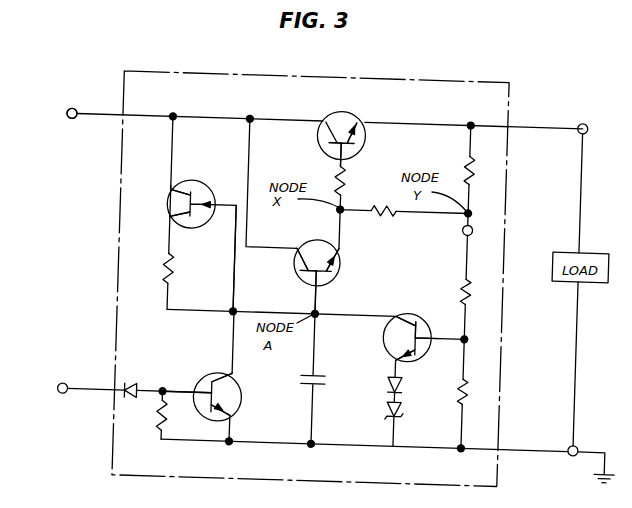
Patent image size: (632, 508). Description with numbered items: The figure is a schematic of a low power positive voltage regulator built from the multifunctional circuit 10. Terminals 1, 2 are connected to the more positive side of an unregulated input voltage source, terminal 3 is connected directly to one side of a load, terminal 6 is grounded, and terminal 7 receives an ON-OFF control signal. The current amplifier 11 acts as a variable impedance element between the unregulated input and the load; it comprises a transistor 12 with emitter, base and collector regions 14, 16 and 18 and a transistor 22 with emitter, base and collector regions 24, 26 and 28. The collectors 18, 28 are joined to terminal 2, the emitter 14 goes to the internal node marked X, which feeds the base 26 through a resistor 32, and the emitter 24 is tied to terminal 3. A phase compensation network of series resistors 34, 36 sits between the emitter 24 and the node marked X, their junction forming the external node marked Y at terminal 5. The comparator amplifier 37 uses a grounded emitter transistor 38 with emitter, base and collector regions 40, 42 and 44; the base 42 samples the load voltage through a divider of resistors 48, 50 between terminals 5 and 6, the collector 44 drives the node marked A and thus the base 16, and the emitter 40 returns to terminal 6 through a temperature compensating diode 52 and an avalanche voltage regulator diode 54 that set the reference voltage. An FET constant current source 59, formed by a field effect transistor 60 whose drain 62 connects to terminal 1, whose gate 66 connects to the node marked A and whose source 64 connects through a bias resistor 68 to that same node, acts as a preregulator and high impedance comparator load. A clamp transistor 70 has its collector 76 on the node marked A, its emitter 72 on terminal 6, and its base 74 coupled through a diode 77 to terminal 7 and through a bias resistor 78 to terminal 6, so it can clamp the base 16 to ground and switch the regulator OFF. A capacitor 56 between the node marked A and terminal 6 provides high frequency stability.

The external terminal 1 is at (50, 88).
The external terminal 2 is at (72, 113).
The external terminal 3 is at (576, 106).
The external terminal 5 is at (474, 233).
The external terminal 6 is at (573, 461).
The external terminal 7 is at (61, 399).
The multifunctional circuit 10 is at (343, 61).
The current amplifier 11 is at (346, 283).
The transistor 12 is at (303, 275).
The emitter region 14 is at (334, 262).
The base region 16 is at (310, 282).
The collector region 18 is at (303, 250).
The transistor 22 is at (362, 153).
The emitter region 24 is at (365, 137).
The base region 26 is at (325, 152).
The collector region 28 is at (336, 118).
The resistor 32 is at (348, 181).
The resistor 34 is at (388, 218).
The resistor 36 is at (462, 168).
The comparator amplifier 37 is at (421, 286).
The grounded emitter transistor 38 is at (427, 325).
The emitter region 40 is at (395, 357).
The base region 42 is at (427, 347).
The collector region 44 is at (405, 320).
The resistor 48 is at (470, 292).
The resistor 50 is at (456, 392).
The temperature compensating diode 52 is at (387, 386).
The voltage regulator diode 54 is at (387, 412).
The capacitor 56 is at (307, 375).
The FET constant current source 59 is at (215, 140).
The field effect transistor 60 is at (203, 193).
The drain region 62 is at (185, 191).
The source region 64 is at (168, 210).
The gate region 66 is at (233, 244).
The bias resistor 68 is at (177, 269).
The clamp transistor 70 is at (198, 374).
The emitter region 72 is at (236, 407).
The base region 74 is at (201, 385).
The collector region 76 is at (237, 385).
The diode 77 is at (128, 384).
The bias resistor 78 is at (155, 417).